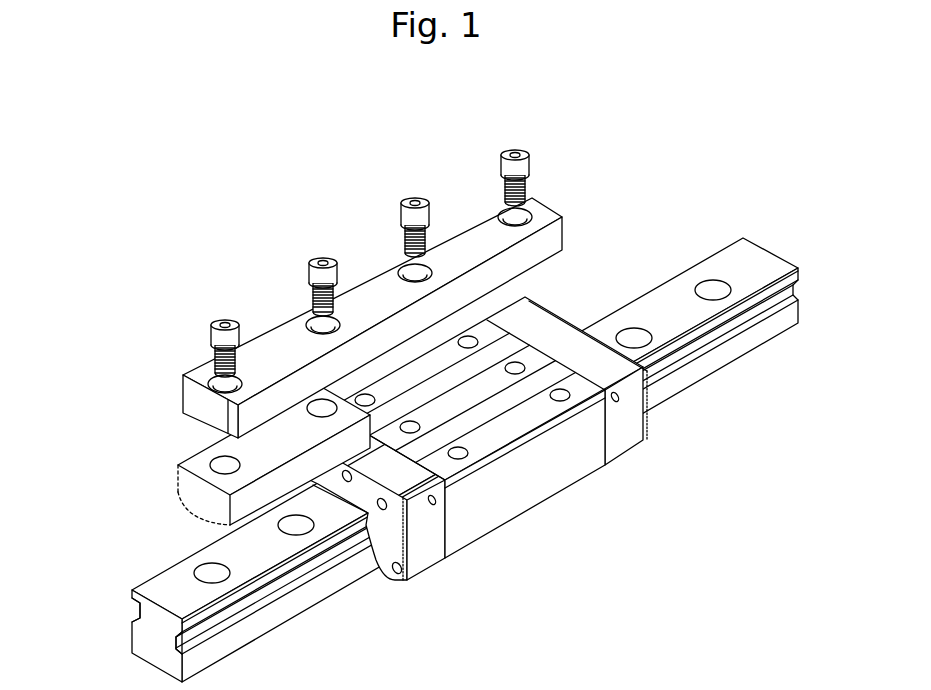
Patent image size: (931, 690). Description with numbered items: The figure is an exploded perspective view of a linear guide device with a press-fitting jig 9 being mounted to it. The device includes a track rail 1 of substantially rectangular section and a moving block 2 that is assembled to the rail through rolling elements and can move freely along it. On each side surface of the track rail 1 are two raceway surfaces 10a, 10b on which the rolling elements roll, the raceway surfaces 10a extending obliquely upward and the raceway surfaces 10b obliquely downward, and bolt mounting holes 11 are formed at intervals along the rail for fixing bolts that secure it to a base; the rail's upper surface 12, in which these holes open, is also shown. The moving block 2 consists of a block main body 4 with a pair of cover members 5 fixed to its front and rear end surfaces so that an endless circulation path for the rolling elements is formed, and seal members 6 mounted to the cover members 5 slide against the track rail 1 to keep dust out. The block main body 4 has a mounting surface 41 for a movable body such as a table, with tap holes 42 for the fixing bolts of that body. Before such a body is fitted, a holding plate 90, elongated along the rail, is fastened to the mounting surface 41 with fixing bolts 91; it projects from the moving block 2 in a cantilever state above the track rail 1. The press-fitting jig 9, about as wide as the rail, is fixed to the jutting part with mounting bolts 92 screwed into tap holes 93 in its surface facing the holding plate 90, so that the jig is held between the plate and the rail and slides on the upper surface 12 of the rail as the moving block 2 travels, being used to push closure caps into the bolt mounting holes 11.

The track rail 1 is at (428, 413).
The moving block 2 is at (477, 450).
The block main body 4 is at (487, 511).
The cover members 5 is at (428, 546).
The seal members 6 is at (388, 556).
The press-fitting jig 9 is at (183, 481).
The raceway surfaces 10a is at (132, 621).
The raceway surfaces 10b is at (133, 600).
The bolt mounting holes 11 is at (213, 572).
The rail top surface 12 is at (760, 262).
The mounting surface 41 is at (532, 355).
The tap holes 42 is at (566, 390).
The holding plate 90 is at (338, 297).
The fixing bolts 91 is at (513, 150).
The mounting bolts 92 is at (322, 260).
The tap holes 93 is at (222, 460).